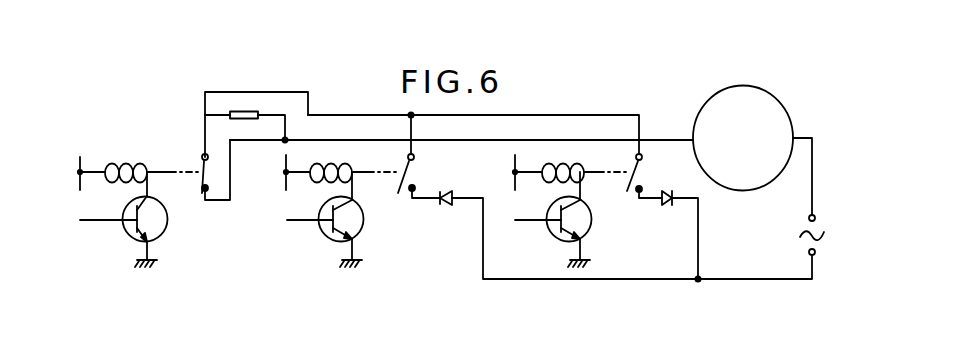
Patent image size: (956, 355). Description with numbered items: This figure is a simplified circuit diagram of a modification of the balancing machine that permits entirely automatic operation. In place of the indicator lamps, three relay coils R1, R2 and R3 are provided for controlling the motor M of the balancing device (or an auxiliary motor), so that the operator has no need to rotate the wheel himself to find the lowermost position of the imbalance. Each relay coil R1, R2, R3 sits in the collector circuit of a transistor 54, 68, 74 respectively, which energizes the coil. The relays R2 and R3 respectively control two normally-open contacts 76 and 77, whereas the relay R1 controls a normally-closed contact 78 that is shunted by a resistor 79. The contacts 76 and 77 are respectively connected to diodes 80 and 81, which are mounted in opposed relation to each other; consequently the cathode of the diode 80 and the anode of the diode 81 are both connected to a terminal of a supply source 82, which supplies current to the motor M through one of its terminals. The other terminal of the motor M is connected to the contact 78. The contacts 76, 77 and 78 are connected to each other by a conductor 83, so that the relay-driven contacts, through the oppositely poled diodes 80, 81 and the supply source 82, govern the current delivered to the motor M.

The relay coil R1 is at (122, 163).
The relay coil R2 is at (316, 180).
The relay coil R3 is at (549, 180).
The transistor 54 is at (168, 221).
The transistor 68 is at (364, 222).
The transistor 74 is at (591, 222).
The normally-open contact 76 is at (415, 174).
The normally-open contact 77 is at (641, 175).
The normally-closed contact 78 is at (201, 171).
The resistor 79 is at (243, 111).
The diode 80 is at (443, 203).
The diode 81 is at (669, 203).
The supply source 82 is at (804, 243).
The conductor 83 is at (576, 114).
The motor M is at (696, 120).